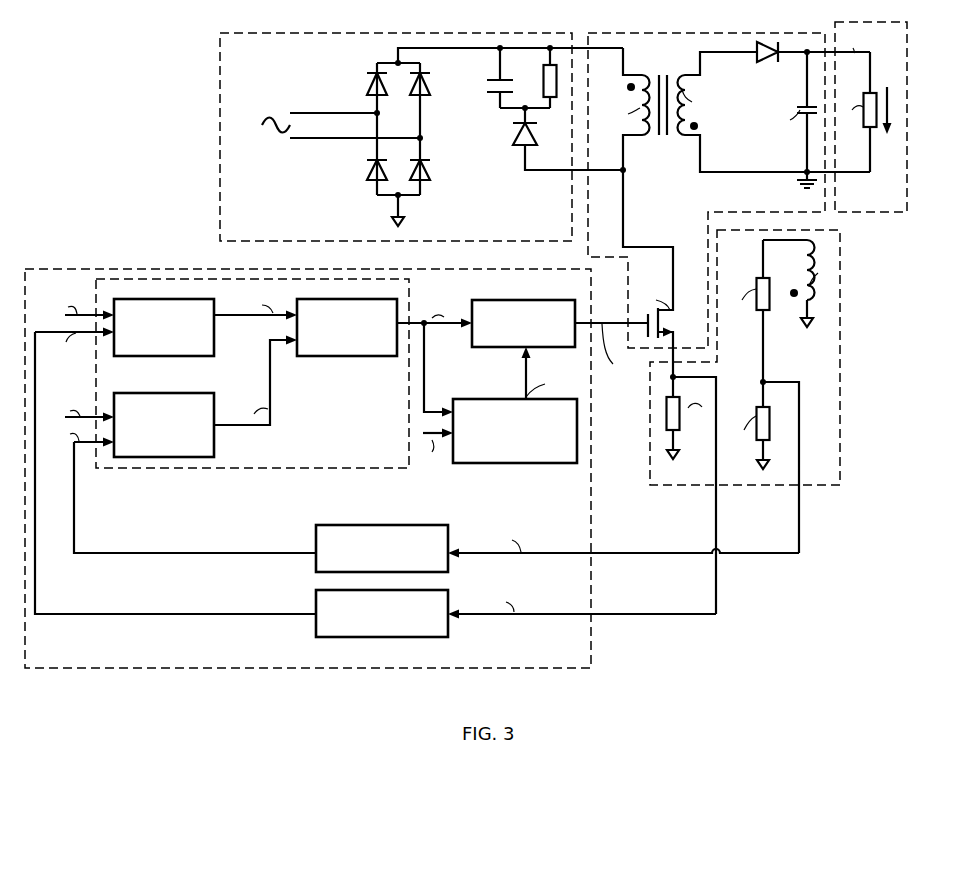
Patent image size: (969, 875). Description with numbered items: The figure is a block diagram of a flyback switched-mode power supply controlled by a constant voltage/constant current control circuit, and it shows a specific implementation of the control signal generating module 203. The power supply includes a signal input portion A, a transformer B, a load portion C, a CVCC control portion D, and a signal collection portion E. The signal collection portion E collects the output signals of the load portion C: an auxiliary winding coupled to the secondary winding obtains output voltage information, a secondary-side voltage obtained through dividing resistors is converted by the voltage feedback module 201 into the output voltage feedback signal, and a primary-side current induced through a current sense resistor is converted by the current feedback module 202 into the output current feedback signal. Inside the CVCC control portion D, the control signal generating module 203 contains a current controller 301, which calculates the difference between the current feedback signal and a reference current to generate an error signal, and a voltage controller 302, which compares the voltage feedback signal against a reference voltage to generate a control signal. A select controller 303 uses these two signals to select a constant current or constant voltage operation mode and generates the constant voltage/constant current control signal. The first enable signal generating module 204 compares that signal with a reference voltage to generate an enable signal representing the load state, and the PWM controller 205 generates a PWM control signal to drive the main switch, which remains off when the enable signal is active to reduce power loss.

The voltage feedback module 201 is at (398, 558).
The current feedback module 202 is at (398, 623).
The control signal generating module 203 is at (369, 461).
The first enable signal generating module 204 is at (531, 440).
The PWM controller 205 is at (540, 333).
The current controller 301 is at (180, 337).
The voltage controller 302 is at (180, 435).
The select controller 303 is at (363, 337).
The signal input portion A is at (242, 235).
The transformer B is at (671, 203).
The load portion C is at (893, 208).
The CVCC control portion D is at (90, 669).
The signal collection portion E is at (836, 483).